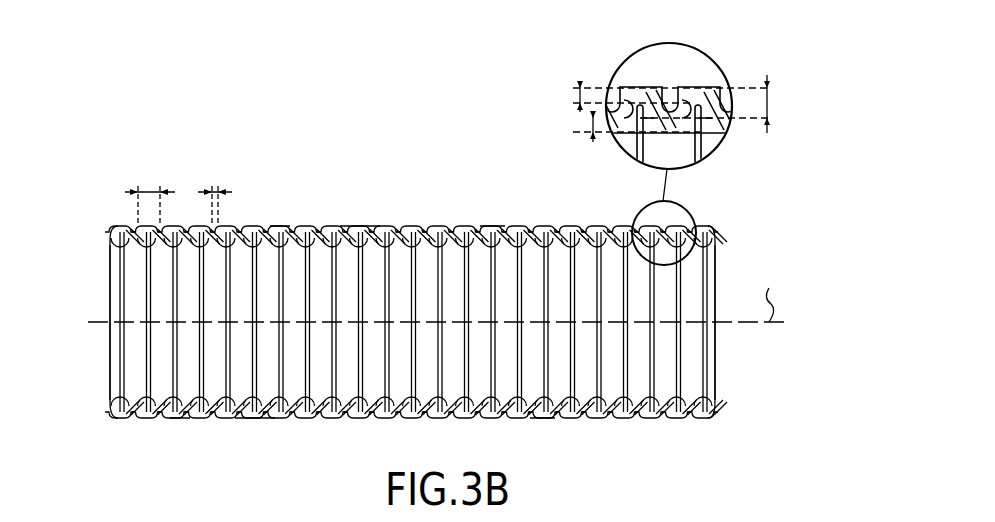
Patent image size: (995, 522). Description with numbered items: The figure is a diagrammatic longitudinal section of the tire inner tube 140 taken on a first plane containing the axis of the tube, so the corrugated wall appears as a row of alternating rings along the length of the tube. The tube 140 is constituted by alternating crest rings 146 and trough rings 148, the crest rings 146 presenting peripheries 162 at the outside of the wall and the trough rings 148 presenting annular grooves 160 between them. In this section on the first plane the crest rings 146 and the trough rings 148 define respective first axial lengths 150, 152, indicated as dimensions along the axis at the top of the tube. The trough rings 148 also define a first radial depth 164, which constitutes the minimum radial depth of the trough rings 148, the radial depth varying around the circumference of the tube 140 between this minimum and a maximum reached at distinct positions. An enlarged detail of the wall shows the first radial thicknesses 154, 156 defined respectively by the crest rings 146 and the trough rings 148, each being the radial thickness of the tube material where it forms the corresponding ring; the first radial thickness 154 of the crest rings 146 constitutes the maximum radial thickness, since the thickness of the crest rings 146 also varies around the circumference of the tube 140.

The tube 140 is at (103, 198).
The crest rings 146 is at (306, 230).
The trough rings 148 is at (373, 232).
The first axial length 150 is at (151, 193).
The first axial length 152 is at (216, 193).
The first radial thickness 154 is at (579, 96).
The first radial thickness 156 is at (591, 130).
The annular grooves 160 is at (452, 232).
The peripheries 162 is at (493, 230).
The first radial depth 164 is at (768, 103).